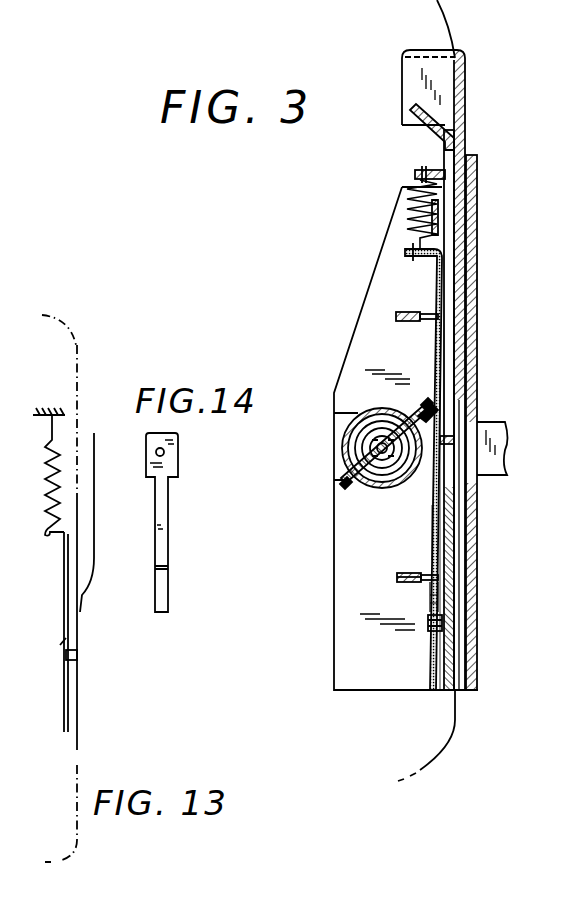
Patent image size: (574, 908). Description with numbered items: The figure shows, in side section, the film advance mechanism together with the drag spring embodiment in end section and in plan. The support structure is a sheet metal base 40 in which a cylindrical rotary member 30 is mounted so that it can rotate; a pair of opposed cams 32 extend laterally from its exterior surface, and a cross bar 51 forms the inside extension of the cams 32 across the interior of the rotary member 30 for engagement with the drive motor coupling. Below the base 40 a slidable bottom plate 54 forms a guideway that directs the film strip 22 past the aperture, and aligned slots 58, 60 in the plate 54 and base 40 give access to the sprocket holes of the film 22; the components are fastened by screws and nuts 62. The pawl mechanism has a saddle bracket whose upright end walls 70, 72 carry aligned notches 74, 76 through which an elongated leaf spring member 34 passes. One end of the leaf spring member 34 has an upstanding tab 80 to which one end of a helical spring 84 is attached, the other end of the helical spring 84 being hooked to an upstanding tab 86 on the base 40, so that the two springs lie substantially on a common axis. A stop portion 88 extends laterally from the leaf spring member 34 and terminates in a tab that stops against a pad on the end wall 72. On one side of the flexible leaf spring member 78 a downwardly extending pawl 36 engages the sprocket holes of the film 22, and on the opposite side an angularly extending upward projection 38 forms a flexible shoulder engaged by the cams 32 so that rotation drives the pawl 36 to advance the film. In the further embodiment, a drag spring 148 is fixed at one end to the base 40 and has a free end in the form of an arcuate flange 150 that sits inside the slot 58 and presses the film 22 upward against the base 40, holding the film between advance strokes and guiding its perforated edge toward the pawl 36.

In FIG. 3, the film strip 22 is at (452, 32).
In FIG. 13, the film strip 22 is at (78, 737).
In FIG. 3, the rotary member 30 is at (345, 445).
In FIG. 3, the cams 32 is at (345, 478).
In FIG. 3, the leaf spring member 34 is at (437, 280).
In FIG. 3, the pawl 36 is at (448, 433).
In FIG. 13, the pawl 36 is at (78, 656).
In FIG. 3, the upward projection 38 is at (430, 410).
In FIG. 13, the upward projection 38 is at (60, 642).
In FIG. 3, the base 40 is at (478, 232).
In FIG. 13, the base 40 is at (77, 690).
In FIG. 3, the cross bar 51 is at (375, 450).
In FIG. 3, the bottom plate 54 is at (466, 82).
In FIG. 3, the slot 58 is at (462, 565).
In FIG. 3, the slot 60 is at (448, 503).
In FIG. 3, the screws and nuts 62 is at (436, 632).
In FIG. 3, the end wall 70 is at (397, 578).
In FIG. 3, the end wall 72 is at (400, 312).
In FIG. 3, the notch 74 is at (425, 573).
In FIG. 3, the notch 76 is at (420, 326).
In FIG. 3, the leaf spring member 78 is at (432, 527).
In FIG. 13, the leaf spring member 78 is at (64, 702).
In FIG. 3, the upstanding tab 80 is at (440, 250).
In FIG. 3, the helical spring 84 is at (420, 224).
In FIG. 13, the helical spring 84 is at (48, 470).
In FIG. 3, the upstanding tab 86 is at (415, 175).
In FIG. 3, the stop portion 88 is at (440, 375).
In FIG. 13, the drag spring 148 is at (85, 442).
In FIG. 13, the arcuate flange 150 is at (84, 600).
In FIG. 14, the arcuate flange 150 is at (165, 592).